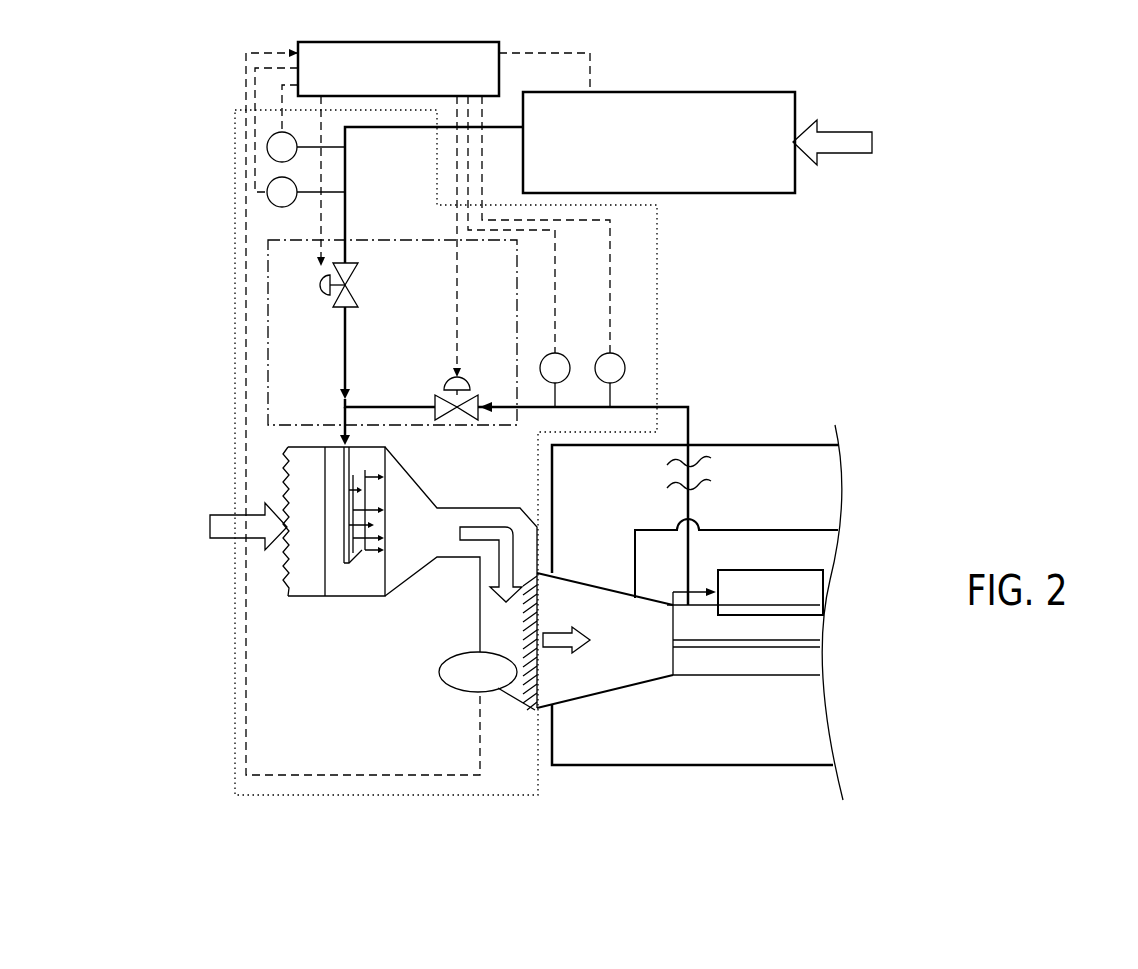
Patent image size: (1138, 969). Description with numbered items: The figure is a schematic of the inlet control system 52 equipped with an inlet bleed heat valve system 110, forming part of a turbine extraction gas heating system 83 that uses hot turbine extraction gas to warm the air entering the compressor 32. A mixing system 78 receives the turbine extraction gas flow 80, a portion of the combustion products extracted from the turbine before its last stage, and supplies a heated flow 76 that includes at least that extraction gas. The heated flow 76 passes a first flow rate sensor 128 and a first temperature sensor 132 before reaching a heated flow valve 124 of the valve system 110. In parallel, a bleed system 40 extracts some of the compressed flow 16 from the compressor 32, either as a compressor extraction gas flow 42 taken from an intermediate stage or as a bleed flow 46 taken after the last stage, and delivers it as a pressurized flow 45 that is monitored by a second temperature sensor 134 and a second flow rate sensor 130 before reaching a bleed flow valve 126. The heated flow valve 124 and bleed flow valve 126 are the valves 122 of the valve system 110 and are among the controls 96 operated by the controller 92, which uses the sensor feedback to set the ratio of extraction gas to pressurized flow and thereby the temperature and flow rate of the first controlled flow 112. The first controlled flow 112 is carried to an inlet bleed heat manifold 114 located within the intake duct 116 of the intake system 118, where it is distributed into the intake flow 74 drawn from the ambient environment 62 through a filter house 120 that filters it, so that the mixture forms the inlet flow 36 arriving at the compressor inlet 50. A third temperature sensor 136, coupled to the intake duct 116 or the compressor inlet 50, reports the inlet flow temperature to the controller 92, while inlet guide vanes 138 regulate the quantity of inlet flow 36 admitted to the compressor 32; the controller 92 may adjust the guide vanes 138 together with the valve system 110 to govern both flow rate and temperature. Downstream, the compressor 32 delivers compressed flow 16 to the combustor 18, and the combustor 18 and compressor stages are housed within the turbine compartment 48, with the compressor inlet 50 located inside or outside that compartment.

The controller 92 is at (456, 42).
The turbine extraction gas (TEG) heating system 83 is at (628, 36).
The mixing system 78 is at (659, 92).
The turbine extraction gas (TEG) flow 80 is at (840, 153).
The first flow rate sensor 128 is at (270, 137).
The first temperature sensor 132 is at (270, 183).
The heated flow 76 is at (379, 128).
The inlet bleed heat (IBH) valve system 110 is at (398, 240).
The inlet control system 52 is at (682, 260).
The valves 122 is at (302, 335).
The heated flow valve 124 is at (318, 285).
The bleed flow valve 126 is at (443, 383).
The controls 96 is at (359, 294).
The second temperature sensor 134 is at (567, 356).
The second flow rate sensor 130 is at (623, 360).
The first controlled flow 112 is at (343, 418).
The pressurized flow 45 is at (672, 405).
The intake system 118 is at (270, 468).
The intake flow 74 is at (227, 515).
The bleed system 40 is at (636, 486).
The bleed flow 46 is at (690, 500).
The inlet guide vanes (IGVs) 138 is at (527, 563).
The compressed flow 16 is at (680, 591).
The combustor 18 is at (803, 570).
The compressor extraction gas (CEG) flow 42 is at (635, 557).
The inlet flow 36 is at (473, 541).
The filter house 120 is at (297, 597).
The IBH manifold 114 is at (340, 577).
The intake duct 116 is at (482, 508).
The ambient environment 62 is at (338, 720).
The third temperature sensor 136 is at (448, 683).
The compressor 32 is at (605, 695).
The compressor inlet 50 is at (550, 762).
The turbine compartment 48 is at (763, 766).